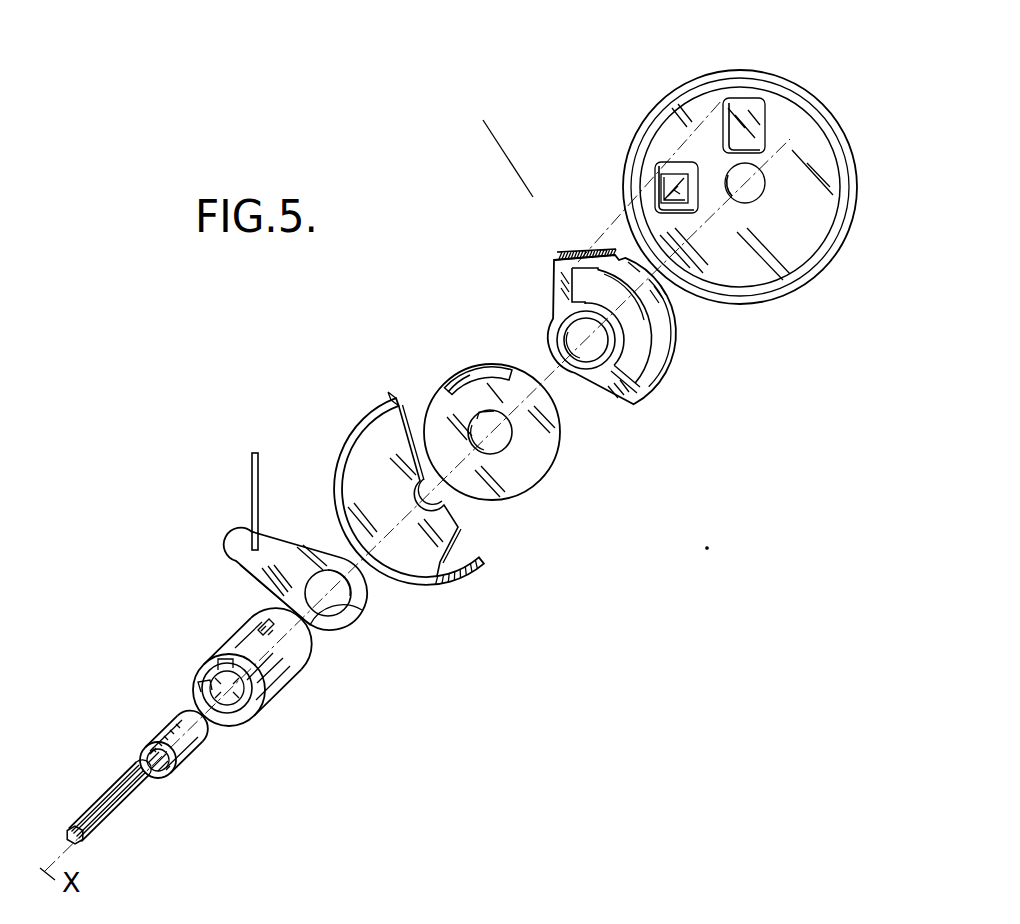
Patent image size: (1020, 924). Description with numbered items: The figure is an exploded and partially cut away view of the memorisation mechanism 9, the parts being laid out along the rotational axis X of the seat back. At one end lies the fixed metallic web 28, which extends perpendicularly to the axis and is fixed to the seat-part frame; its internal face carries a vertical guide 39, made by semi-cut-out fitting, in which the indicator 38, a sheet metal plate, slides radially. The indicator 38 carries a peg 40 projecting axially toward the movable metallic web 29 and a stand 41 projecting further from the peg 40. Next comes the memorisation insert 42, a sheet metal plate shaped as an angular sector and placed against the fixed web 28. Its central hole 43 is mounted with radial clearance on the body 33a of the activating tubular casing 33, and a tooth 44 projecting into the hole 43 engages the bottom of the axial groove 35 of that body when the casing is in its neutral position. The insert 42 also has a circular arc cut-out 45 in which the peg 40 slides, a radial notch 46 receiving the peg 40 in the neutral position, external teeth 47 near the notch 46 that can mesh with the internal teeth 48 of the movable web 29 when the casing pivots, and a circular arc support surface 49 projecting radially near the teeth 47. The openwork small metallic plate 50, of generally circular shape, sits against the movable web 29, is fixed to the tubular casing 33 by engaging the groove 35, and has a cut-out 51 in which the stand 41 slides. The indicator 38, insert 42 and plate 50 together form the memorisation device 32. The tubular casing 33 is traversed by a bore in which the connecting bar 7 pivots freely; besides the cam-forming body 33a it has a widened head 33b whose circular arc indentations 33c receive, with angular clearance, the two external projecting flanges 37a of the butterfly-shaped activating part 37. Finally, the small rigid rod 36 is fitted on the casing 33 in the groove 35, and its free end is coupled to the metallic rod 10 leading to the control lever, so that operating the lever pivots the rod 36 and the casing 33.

The connecting bar 7 is at (95, 803).
The memorisation mechanism 9 is at (533, 197).
The metallic rod 10 is at (253, 492).
The fixed metallic web 28 is at (787, 247).
The movable metallic web 29 is at (437, 518).
The memorisation device 32 is at (608, 318).
The activating tubular casing 33 is at (258, 680).
The body 33a is at (290, 650).
The widened head 33b is at (243, 705).
The circular arc indentations 33c is at (233, 665).
The axial groove 35 is at (263, 625).
The small rigid rod 36 is at (278, 545).
The activating part 37 is at (198, 761).
The external projecting flanges 37a is at (150, 737).
The indicator 38 is at (658, 162).
The vertical guide 39 is at (767, 117).
The peg 40 is at (682, 207).
The stand 41 is at (667, 190).
The memorisation insert 42 is at (622, 383).
The central hole 43 is at (562, 330).
The tooth 44 is at (605, 312).
The circular arc cut-out 45 is at (653, 357).
The radial notch 46 is at (573, 254).
The external teeth 47 is at (600, 250).
The internal teeth 48 is at (470, 553).
The circular arc support surface 49 is at (623, 266).
The openwork small metallic plate 50 is at (505, 413).
The cut-out 51 is at (475, 378).